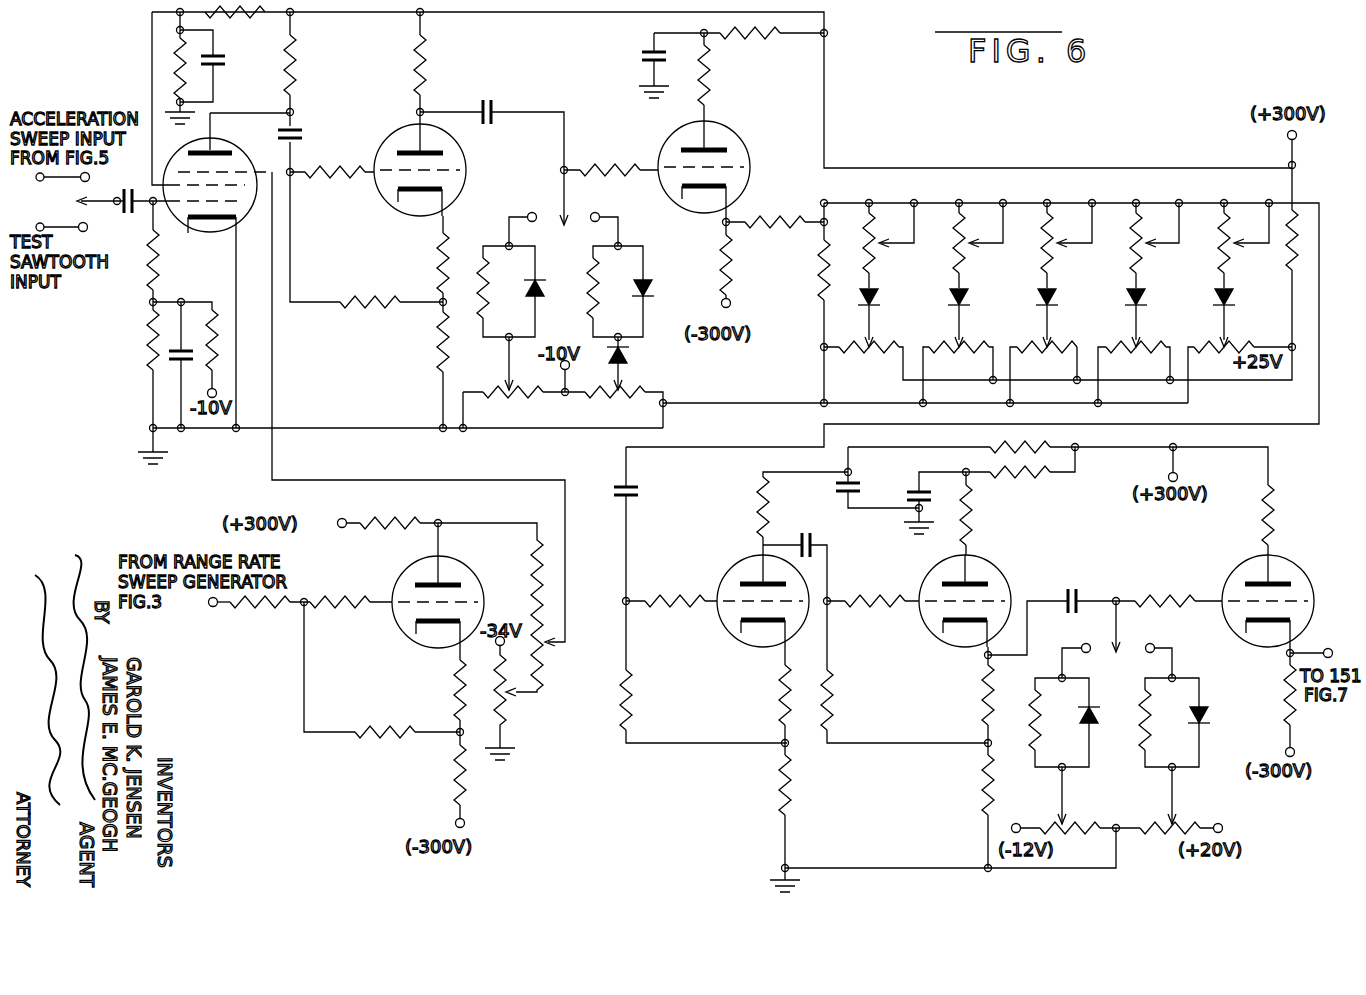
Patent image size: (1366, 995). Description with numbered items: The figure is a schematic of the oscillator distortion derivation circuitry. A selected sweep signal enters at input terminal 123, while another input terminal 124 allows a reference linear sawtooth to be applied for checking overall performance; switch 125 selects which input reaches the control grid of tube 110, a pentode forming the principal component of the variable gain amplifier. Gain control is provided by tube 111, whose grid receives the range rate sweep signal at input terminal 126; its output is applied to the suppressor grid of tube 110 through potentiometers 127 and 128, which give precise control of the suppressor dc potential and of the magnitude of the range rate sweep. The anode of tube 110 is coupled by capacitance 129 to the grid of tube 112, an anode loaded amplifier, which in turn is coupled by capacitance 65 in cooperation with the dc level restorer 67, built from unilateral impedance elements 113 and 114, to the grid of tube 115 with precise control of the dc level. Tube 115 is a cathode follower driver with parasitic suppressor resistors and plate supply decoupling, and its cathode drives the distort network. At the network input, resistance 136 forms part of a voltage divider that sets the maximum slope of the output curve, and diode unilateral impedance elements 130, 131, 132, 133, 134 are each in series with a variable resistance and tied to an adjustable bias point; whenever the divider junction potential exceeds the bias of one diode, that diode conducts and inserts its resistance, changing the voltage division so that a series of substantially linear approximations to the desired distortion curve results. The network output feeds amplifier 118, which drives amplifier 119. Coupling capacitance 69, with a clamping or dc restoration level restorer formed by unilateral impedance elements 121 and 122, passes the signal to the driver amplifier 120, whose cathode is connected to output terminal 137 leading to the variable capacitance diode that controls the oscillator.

The capacitance 65 is at (493, 108).
The dc level restorer 67 is at (572, 326).
The coupling capacitance 69 is at (1077, 596).
The tube 110 is at (188, 234).
The tube 111 is at (404, 630).
The tube 112 is at (384, 206).
The unilateral impedance element 113 is at (533, 278).
The unilateral impedance element 114 is at (647, 298).
The electron tube 115 is at (669, 198).
The amplifier 118 is at (727, 631).
The amplifier 119 is at (930, 631).
The driver amplifier 120 is at (1234, 631).
The unilateral impedance element 121 is at (1084, 707).
The unilateral impedance element 122 is at (1193, 730).
The input terminal 123 is at (38, 181).
The input terminal 124 is at (39, 223).
The switch 125 is at (106, 208).
The input terminal 126 is at (213, 607).
The potentiometer 127 is at (524, 711).
The potentiometer 128 is at (546, 655).
The capacitance 129 is at (300, 134).
The diode unilateral impedance element 130 is at (871, 288).
The diode unilateral impedance element 131 is at (961, 288).
The diode unilateral impedance element 132 is at (1049, 288).
The diode unilateral impedance element 133 is at (1138, 288).
The diode unilateral impedance element 134 is at (1226, 288).
The resistance 136 is at (820, 268).
The output terminal 137 is at (1325, 649).